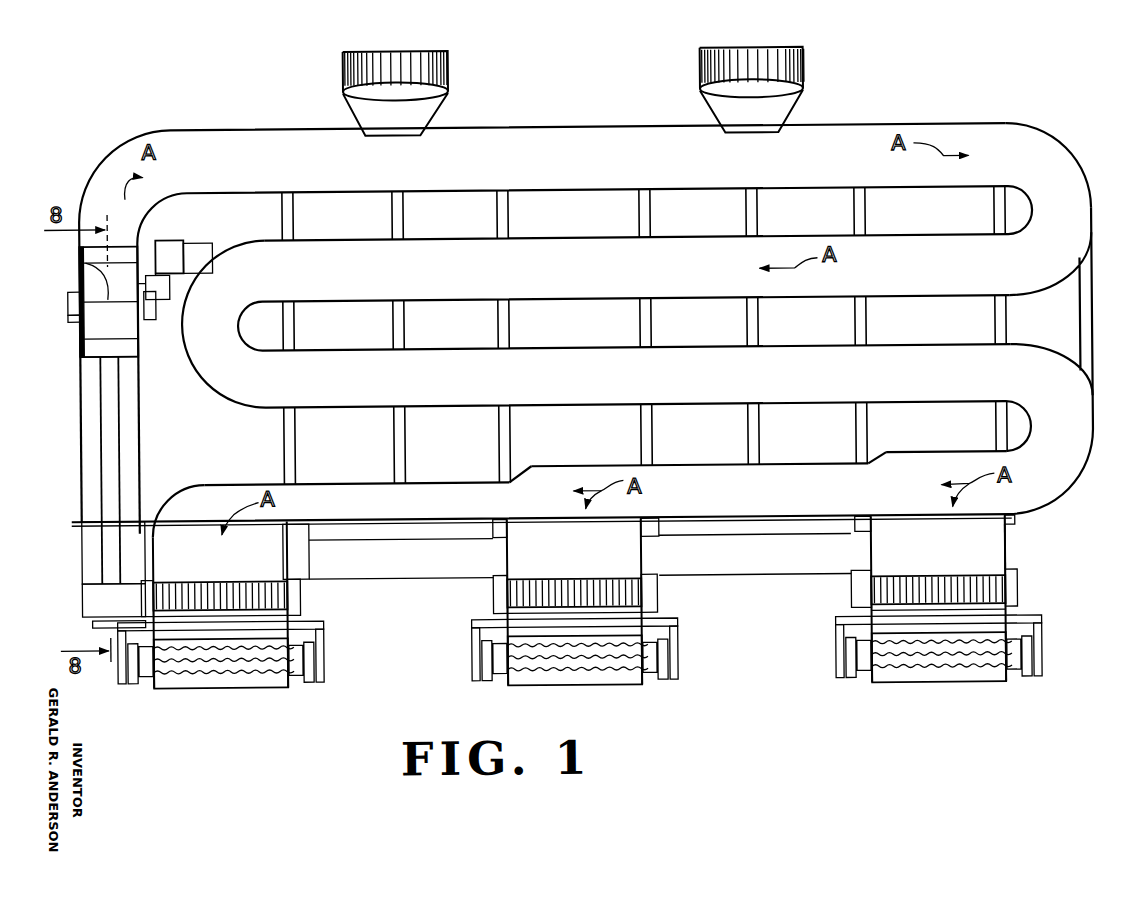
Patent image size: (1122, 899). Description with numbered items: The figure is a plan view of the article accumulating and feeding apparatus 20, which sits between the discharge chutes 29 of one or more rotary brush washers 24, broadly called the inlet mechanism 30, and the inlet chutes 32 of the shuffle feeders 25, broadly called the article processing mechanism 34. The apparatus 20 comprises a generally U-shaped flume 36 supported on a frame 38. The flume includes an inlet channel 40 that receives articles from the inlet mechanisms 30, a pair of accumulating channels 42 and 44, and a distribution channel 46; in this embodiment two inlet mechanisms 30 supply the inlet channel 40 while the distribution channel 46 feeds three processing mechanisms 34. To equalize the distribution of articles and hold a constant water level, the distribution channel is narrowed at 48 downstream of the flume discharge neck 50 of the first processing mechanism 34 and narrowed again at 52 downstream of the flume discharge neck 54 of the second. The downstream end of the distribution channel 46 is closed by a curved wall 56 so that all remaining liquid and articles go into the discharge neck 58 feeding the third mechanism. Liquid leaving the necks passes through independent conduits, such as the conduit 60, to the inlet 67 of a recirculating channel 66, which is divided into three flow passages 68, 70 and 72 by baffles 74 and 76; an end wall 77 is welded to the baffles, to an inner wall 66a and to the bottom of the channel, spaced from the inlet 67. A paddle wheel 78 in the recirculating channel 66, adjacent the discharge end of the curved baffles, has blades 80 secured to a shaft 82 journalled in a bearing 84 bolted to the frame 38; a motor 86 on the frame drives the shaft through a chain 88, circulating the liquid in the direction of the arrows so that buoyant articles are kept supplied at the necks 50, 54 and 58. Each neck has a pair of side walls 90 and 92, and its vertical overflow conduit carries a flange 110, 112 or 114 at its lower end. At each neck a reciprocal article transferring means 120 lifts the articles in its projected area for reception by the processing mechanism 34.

The article accumulating and feeding apparatus 20 is at (969, 82).
The rotary brush washer 24 is at (422, 87).
The shuffle feeder 25 is at (256, 680).
The discharge chute 29 is at (418, 117).
The inlet mechanism 30 is at (344, 61).
The inlet chute 32 is at (231, 640).
The article processing mechanism 34 is at (196, 680).
The flume 36 is at (1044, 130).
The frame 38 is at (870, 328).
The inlet channel 40 is at (549, 170).
The accumulating channel 42 is at (549, 280).
The accumulating channel 44 is at (549, 392).
The distribution channel 46 is at (734, 506).
The reduced width portion 48 is at (873, 465).
The flume discharge neck 50 is at (891, 562).
The reduced width portion 52 is at (528, 470).
The flume discharge neck 54 is at (539, 561).
The curved wall 56 is at (166, 491).
The flume discharge neck 58 is at (186, 560).
The conduit 60 is at (746, 563).
The recirculating channel 66 is at (78, 428).
The inner wall 66a is at (140, 484).
The inlet 67 is at (104, 597).
The flow passage 68 is at (128, 380).
The flow passage 70 is at (110, 400).
The flow passage 72 is at (93, 424).
The baffle 74 is at (118, 446).
The baffle 76 is at (100, 469).
The end wall 77 is at (104, 576).
The paddle wheel 78 is at (78, 255).
The blade 80 is at (80, 280).
The shaft 82 is at (68, 309).
The bearing 84 is at (68, 292).
The motor 86 is at (172, 237).
The chain 88 is at (160, 280).
The side wall 90 is at (1007, 551).
The side wall 92 is at (868, 550).
The flange 110 is at (1015, 596).
The flange 112 is at (656, 602).
The flange 114 is at (298, 600).
The reciprocal article transferring means 120 is at (245, 579).